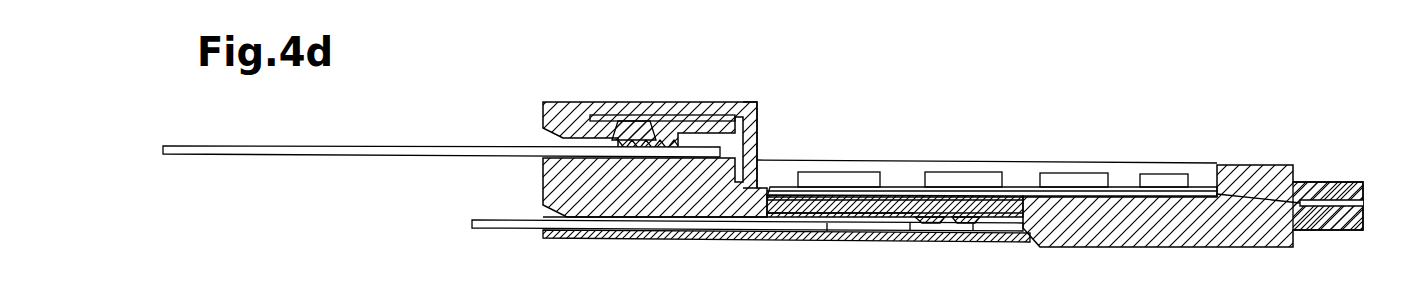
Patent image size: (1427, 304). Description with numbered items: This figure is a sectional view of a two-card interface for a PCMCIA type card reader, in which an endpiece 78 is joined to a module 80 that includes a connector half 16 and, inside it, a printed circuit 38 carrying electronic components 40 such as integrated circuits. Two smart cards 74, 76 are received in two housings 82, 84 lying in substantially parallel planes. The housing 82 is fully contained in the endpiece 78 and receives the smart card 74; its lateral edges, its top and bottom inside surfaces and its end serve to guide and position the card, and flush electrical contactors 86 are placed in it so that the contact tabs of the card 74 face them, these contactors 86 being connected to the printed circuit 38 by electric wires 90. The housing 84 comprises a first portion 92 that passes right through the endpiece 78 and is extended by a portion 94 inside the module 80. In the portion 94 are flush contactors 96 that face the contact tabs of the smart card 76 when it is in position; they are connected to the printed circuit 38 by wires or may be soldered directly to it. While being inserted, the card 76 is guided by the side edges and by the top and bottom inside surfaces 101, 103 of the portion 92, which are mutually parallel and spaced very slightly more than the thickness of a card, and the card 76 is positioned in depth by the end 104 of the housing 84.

The connector half 16 is at (1330, 182).
The printed circuit 38 is at (1018, 187).
The electronic components 40 is at (848, 172).
The smart card 74 is at (225, 145).
The smart card 76 is at (485, 230).
The endpiece 78 is at (690, 101).
The module 80 is at (975, 150).
The housing 82 is at (655, 101).
The housing 84 is at (910, 224).
The flush electrical contactors 86 is at (632, 100).
The electric wires 90 is at (723, 102).
The first portion 92 is at (760, 230).
The portion 94 is at (828, 232).
The flush contactors 96 is at (973, 224).
The top inside surface 101 is at (607, 230).
The bottom inside surface 103 is at (675, 238).
The end 104 is at (1033, 236).